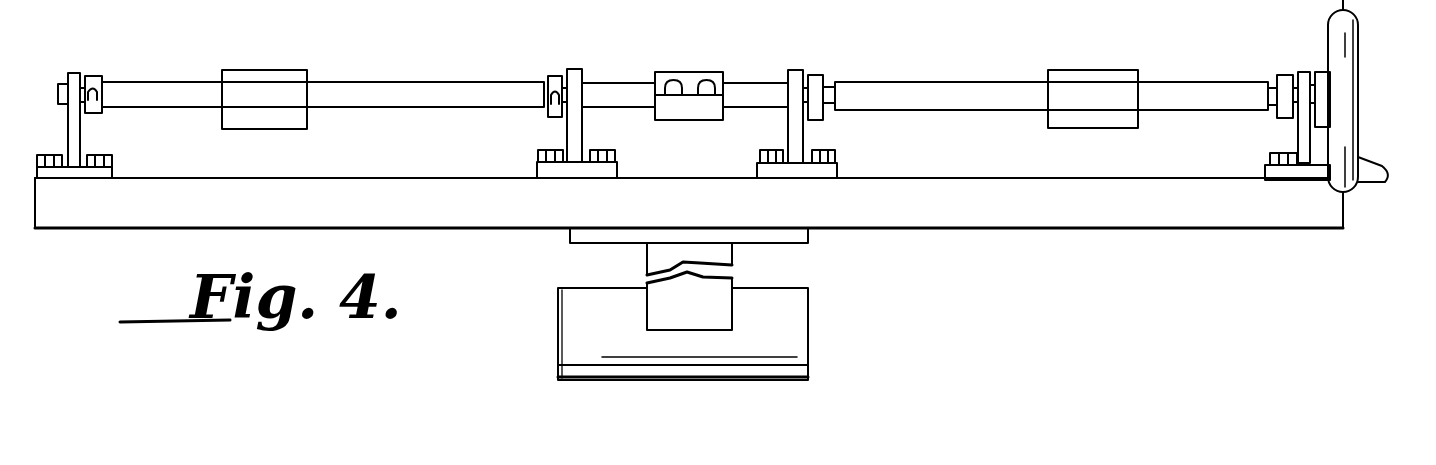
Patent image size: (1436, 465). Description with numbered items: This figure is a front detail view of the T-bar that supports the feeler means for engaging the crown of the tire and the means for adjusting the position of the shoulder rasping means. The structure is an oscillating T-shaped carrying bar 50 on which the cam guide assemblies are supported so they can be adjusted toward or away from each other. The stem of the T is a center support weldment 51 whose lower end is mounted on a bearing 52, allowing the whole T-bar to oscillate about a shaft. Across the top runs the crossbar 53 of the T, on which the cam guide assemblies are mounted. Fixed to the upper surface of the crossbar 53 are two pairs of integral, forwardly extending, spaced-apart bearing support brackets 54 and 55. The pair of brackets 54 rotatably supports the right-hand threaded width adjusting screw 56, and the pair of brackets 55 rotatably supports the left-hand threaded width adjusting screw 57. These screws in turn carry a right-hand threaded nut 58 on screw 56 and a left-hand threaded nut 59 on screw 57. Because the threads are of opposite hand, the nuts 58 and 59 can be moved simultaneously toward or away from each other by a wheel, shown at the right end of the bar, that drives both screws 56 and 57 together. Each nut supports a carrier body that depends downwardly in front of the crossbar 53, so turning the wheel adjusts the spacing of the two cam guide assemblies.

The T-shaped carrying bar 50 is at (700, 307).
The center support weldment 51 is at (663, 257).
The bearing 52 is at (792, 327).
The crossbar 53 is at (505, 213).
The bearing support brackets 54 is at (68, 123).
The bearing support brackets 55 is at (792, 80).
The right hand threaded width adjusting screw 56 is at (440, 68).
The left hand threaded width adjusting screw 57 is at (967, 95).
The right hand threaded nut 58 is at (267, 88).
The left hand threaded nut 59 is at (1097, 82).